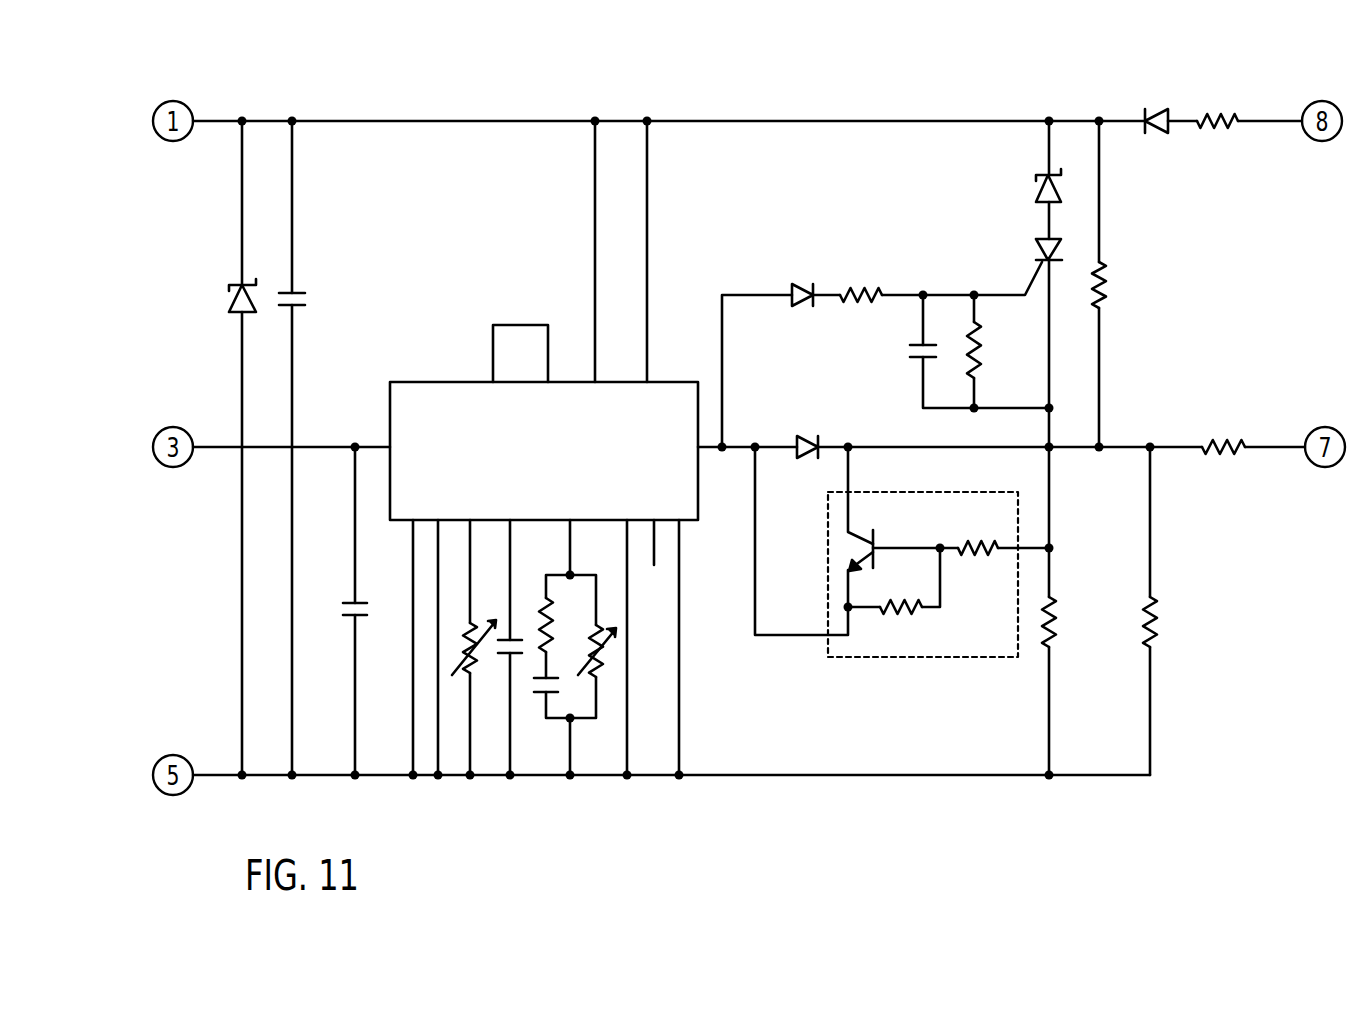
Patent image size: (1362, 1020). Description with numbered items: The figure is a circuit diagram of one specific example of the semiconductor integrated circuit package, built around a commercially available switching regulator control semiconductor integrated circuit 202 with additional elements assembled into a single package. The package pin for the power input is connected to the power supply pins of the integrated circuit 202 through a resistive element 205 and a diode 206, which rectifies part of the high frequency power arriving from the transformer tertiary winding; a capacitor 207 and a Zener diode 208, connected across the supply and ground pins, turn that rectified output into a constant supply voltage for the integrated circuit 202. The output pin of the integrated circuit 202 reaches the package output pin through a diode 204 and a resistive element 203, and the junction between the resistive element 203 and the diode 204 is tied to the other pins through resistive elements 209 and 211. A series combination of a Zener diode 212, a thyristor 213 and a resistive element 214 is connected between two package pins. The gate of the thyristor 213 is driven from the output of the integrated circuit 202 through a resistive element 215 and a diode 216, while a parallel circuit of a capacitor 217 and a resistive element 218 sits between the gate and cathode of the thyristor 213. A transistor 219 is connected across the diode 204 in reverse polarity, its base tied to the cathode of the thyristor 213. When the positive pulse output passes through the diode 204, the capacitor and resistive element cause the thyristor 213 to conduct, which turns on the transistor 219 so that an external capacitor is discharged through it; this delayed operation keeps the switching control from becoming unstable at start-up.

The switching regulator control semiconductor integrated circuit 202 is at (452, 380).
The resistive element 203 is at (1220, 432).
The diode 204 is at (810, 432).
The resistive element 205 is at (1213, 110).
The diode 206 is at (1157, 102).
The capacitor 207 is at (300, 283).
The Zener diode 208 is at (240, 287).
The resistive element 209 is at (1110, 272).
The resistive element 211 is at (1167, 623).
The Zener diode 212 is at (1036, 195).
The thyristor 213 is at (1037, 254).
The resistive element 214 is at (1065, 623).
The resistive element 215 is at (863, 282).
The diode 216 is at (805, 283).
The capacitor 217 is at (908, 352).
The resistive element 218 is at (985, 340).
The transistor 219 is at (880, 543).